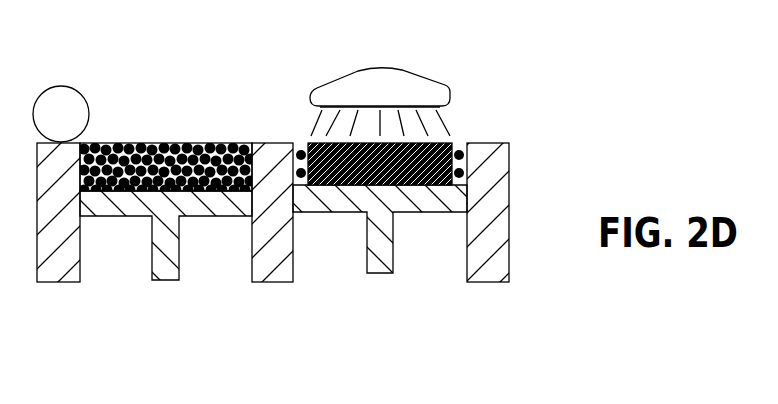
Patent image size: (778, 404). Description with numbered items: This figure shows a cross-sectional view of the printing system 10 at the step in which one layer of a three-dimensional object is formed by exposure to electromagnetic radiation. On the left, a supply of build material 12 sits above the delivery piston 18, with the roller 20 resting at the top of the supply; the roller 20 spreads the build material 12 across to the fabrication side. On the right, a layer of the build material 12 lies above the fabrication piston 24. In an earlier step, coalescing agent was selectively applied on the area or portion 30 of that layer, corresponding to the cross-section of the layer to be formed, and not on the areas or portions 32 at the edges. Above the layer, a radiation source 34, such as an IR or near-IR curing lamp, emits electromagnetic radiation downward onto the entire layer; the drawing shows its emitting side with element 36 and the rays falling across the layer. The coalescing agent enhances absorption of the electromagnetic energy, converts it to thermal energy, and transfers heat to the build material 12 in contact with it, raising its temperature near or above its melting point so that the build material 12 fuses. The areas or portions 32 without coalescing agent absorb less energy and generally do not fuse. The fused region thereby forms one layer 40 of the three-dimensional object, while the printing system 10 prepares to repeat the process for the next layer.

The printing system 10 is at (531, 148).
The build material 12 is at (162, 143).
The delivery piston 18 is at (162, 272).
The roller 20 is at (60, 115).
The fabrication piston 24 is at (380, 261).
The area or portion 30 is at (465, 210).
The areas or portions 32 is at (300, 138).
The radiation source 34 is at (378, 84).
The emitting surface of light source 36 is at (446, 107).
The layer of the 3D object 40 is at (342, 138).